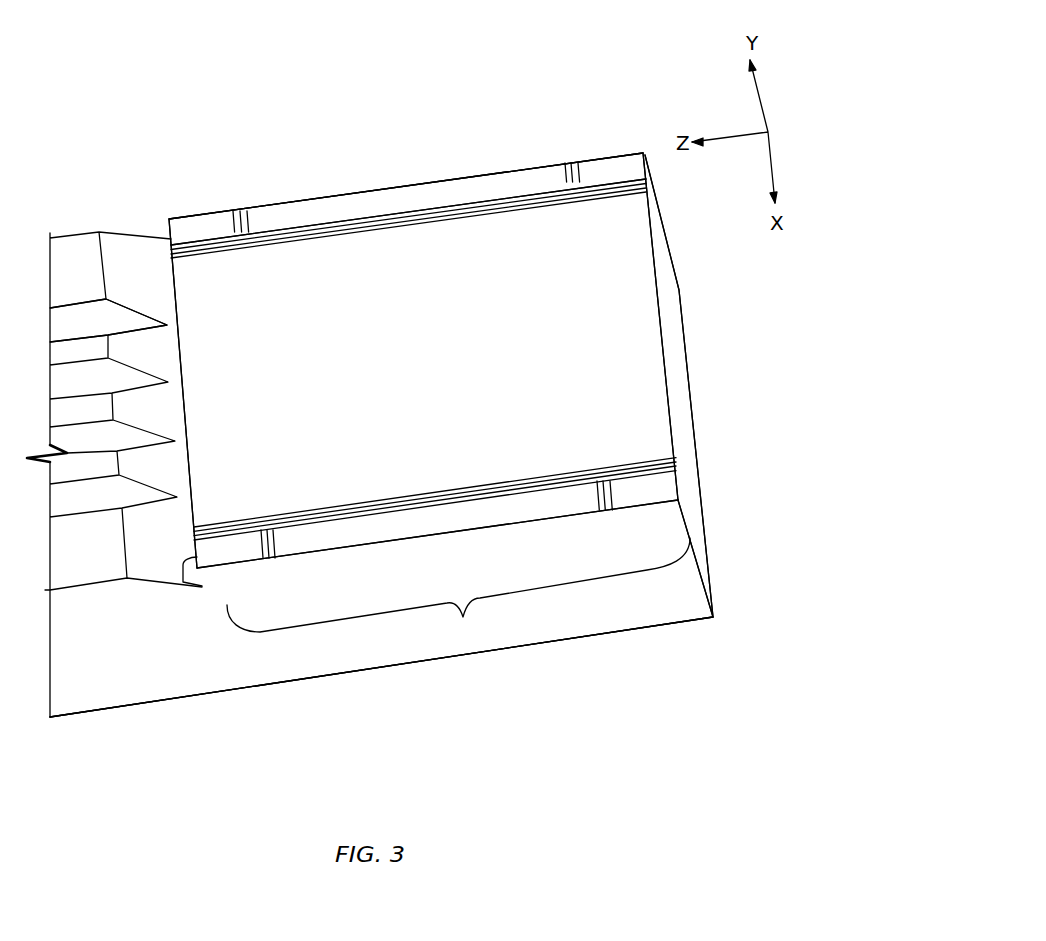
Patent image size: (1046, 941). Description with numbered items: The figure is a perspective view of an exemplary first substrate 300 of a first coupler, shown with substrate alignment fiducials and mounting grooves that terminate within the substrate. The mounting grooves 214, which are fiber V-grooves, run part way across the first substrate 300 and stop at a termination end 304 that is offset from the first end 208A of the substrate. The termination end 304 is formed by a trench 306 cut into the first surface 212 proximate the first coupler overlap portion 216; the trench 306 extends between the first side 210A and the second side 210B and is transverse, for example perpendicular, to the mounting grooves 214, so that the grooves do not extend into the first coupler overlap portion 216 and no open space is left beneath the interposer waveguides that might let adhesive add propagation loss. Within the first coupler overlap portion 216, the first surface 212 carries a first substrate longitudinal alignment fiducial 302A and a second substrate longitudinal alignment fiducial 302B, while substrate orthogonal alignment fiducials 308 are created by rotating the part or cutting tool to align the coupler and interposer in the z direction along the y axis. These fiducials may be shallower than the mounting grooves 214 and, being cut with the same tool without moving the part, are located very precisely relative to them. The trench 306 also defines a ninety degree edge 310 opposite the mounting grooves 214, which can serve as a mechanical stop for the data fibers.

The first substrate 300 is at (632, 72).
The mounting grooves 214 is at (83, 302).
The termination end 304 is at (127, 323).
The trench 306 is at (163, 585).
The 90 degree edge 310 is at (183, 583).
The first side 210A is at (453, 180).
The second side 210B is at (580, 607).
The first end 208A is at (688, 477).
The first surface 212 is at (302, 213).
The first substrate longitudinal alignment fiducial 302A is at (353, 220).
The second substrate longitudinal alignment fiducial 302B is at (565, 472).
The substrate orthogonal alignment fiducials 308 is at (243, 222).
The first coupler overlap portion 216 is at (458, 592).